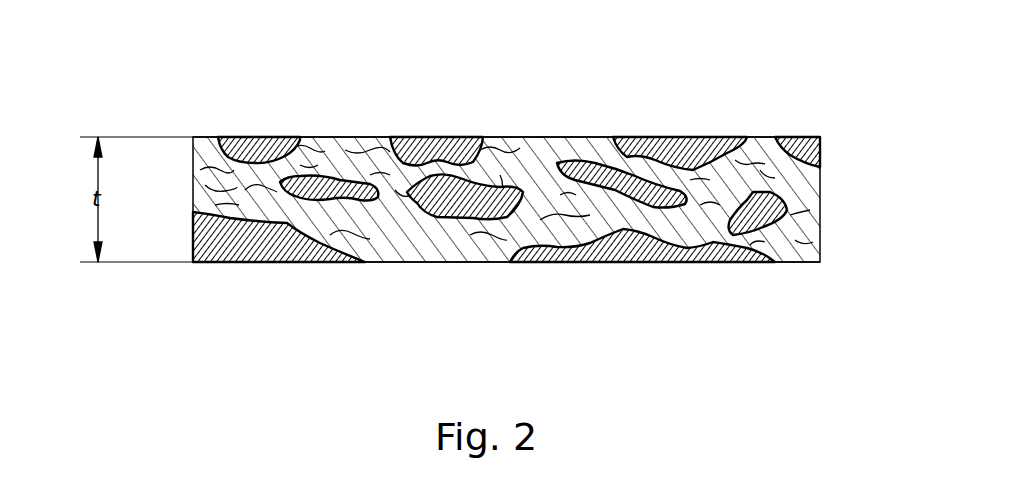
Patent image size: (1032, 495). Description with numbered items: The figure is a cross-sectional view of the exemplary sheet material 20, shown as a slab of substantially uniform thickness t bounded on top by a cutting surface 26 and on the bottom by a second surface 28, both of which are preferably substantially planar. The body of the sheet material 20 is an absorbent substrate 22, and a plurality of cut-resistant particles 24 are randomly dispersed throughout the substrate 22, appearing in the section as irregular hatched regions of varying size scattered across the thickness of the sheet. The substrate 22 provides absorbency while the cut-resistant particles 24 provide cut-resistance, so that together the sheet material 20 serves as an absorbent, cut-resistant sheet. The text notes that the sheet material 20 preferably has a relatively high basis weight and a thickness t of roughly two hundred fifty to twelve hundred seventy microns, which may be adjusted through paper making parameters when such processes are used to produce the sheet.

The sheet material 20 is at (165, 303).
The absorbent substrate 22 is at (316, 150).
The cut-resistant particles 24 is at (252, 138).
The cutting surface 26 is at (212, 137).
The second surface 28 is at (224, 263).